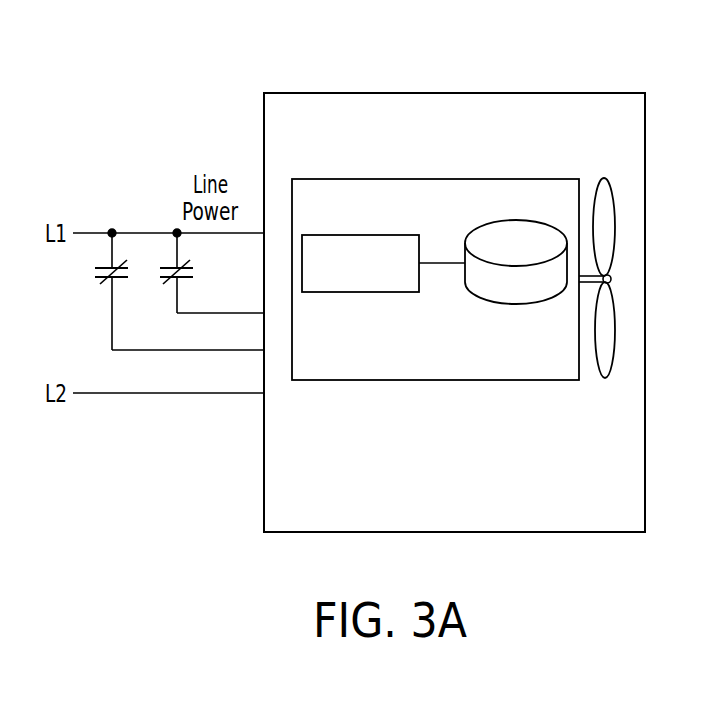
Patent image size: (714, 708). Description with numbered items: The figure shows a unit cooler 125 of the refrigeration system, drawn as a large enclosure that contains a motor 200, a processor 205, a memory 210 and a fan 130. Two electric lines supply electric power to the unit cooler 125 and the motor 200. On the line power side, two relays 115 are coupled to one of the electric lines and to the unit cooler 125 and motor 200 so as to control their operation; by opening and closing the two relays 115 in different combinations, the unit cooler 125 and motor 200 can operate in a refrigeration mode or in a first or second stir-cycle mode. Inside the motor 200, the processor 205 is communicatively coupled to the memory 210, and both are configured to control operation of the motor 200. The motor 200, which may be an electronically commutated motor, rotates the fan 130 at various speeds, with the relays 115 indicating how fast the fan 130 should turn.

The unit cooler 125 is at (457, 44).
The motor 200 is at (493, 178).
The processor 205 is at (348, 292).
The memory 210 is at (517, 303).
The fan 130 is at (613, 355).
The relay 115 is at (98, 280).